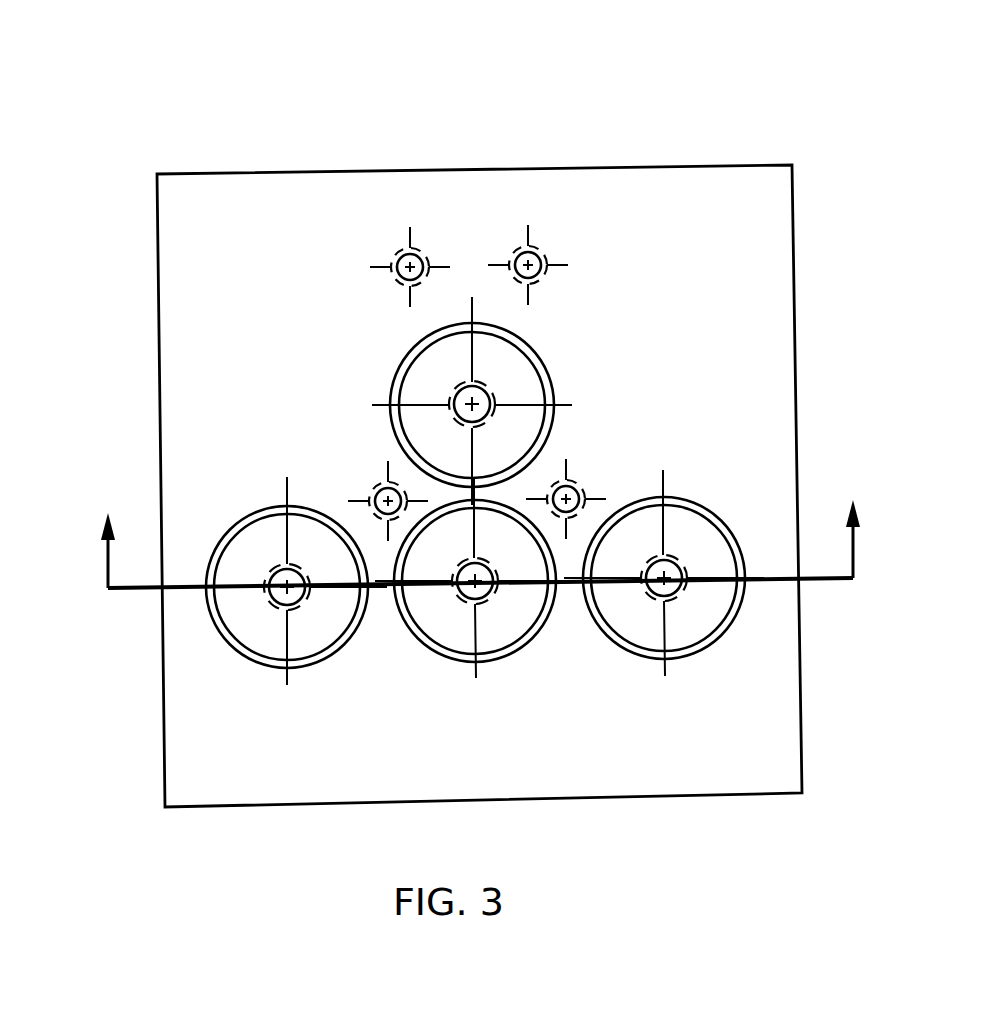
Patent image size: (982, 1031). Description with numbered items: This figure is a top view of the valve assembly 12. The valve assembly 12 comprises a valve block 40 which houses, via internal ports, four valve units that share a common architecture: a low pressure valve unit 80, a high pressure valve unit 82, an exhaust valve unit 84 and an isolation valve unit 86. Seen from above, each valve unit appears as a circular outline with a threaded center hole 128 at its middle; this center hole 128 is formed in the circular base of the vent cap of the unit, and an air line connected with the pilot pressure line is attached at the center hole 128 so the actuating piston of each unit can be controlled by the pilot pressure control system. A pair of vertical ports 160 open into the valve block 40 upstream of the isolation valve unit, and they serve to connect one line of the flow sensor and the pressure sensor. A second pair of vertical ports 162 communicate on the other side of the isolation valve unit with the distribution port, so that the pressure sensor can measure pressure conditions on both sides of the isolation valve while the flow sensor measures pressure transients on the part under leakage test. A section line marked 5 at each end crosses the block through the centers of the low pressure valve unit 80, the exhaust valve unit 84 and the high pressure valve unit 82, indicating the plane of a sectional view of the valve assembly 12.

The valve assembly 12 is at (470, 516).
The valve block 40 is at (798, 392).
The section line 5- 5 is at (479, 520).
The low pressure valve unit 80 is at (210, 618).
The high pressure valve unit 82 is at (725, 635).
The exhaust valve unit 84 is at (503, 662).
The isolation valve unit 86 is at (397, 372).
The center hole 128 is at (495, 395).
The vertical ports 160 is at (403, 247).
The vertical ports 162 is at (517, 247).